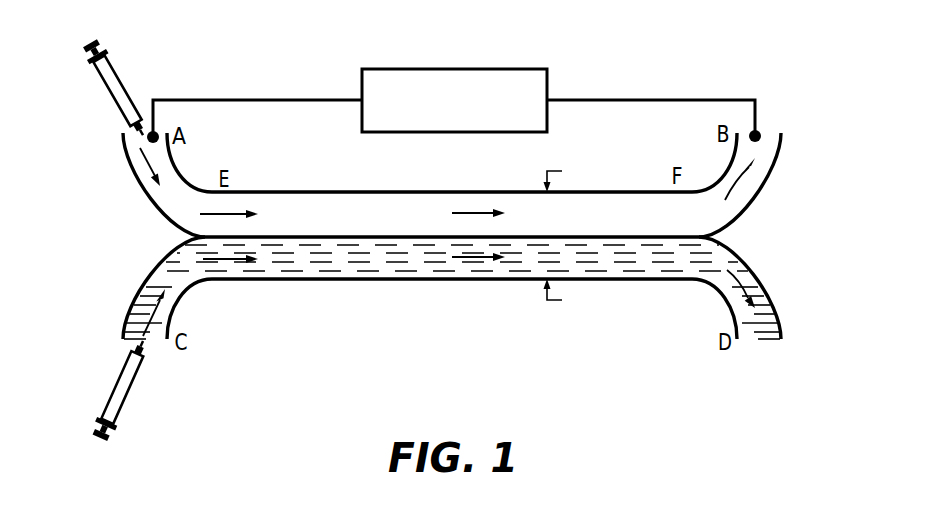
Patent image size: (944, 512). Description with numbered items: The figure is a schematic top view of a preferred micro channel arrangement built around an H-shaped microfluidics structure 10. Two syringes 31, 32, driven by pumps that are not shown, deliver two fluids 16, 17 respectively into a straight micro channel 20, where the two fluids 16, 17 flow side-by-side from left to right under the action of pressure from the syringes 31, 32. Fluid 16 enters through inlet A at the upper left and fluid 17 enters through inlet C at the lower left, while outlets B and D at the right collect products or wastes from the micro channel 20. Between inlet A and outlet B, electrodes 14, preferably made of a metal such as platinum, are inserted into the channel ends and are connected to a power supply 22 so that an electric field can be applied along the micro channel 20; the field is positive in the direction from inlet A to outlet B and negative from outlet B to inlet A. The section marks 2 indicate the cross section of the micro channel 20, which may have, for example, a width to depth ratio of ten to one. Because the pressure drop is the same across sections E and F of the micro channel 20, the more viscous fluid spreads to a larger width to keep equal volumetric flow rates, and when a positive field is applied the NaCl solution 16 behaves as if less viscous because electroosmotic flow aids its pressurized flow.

The H-shaped microfluidics structure 10 is at (828, 237).
The electrodes 14 is at (145, 130).
The fluid (NaCl solution) 16 is at (747, 195).
The fluid 17 is at (763, 320).
The straight micro channel 20 is at (596, 216).
The power supply 22 is at (450, 68).
The syringe 31 is at (108, 95).
The syringe 32 is at (115, 377).
The section line 2- 2 is at (561, 237).